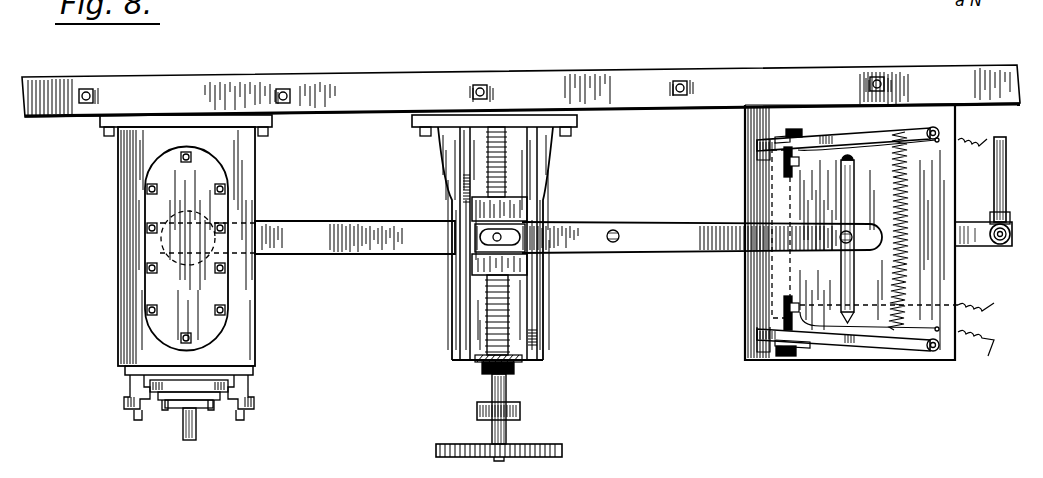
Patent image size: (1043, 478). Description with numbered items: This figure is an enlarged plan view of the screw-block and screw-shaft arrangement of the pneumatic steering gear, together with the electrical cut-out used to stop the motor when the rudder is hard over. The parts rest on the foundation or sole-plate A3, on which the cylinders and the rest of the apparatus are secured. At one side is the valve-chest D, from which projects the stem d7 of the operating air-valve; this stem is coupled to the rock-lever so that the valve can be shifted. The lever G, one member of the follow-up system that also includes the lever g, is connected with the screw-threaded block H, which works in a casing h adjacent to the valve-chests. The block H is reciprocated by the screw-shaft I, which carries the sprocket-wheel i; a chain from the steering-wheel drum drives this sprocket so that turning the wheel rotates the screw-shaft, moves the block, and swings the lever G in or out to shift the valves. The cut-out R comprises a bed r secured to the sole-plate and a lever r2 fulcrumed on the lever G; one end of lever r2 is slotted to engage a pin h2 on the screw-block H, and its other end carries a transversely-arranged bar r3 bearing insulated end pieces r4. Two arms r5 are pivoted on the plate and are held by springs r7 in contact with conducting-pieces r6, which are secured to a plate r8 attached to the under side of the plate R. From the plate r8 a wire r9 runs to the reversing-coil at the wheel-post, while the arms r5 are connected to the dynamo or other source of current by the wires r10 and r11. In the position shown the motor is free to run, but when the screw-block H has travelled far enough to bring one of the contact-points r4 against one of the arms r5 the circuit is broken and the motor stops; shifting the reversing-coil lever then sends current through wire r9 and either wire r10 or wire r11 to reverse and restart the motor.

The sole-plate A3 is at (521, 79).
The valve-chest D is at (191, 267).
The stem of the operating air-valve d7 is at (197, 430).
The lever G is at (320, 250).
The casing h is at (460, 182).
The screw-threaded block H is at (508, 210).
The pin h2 is at (478, 251).
The screw-shaft I is at (500, 307).
The sprocket-wheel i is at (533, 448).
The lever r2 is at (657, 254).
The cut-out R is at (860, 232).
The bed r is at (852, 355).
The transversely-arranged bar r3 is at (850, 265).
The insulated end pieces r4 is at (852, 154).
The arms r5 is at (905, 362).
The conducting-pieces r6 is at (785, 160).
The springs r7 is at (907, 177).
The plate r8 is at (790, 272).
The wire r9 is at (978, 298).
The wire r10 is at (982, 133).
The wire r11 is at (976, 353).
The lever g is at (1004, 181).